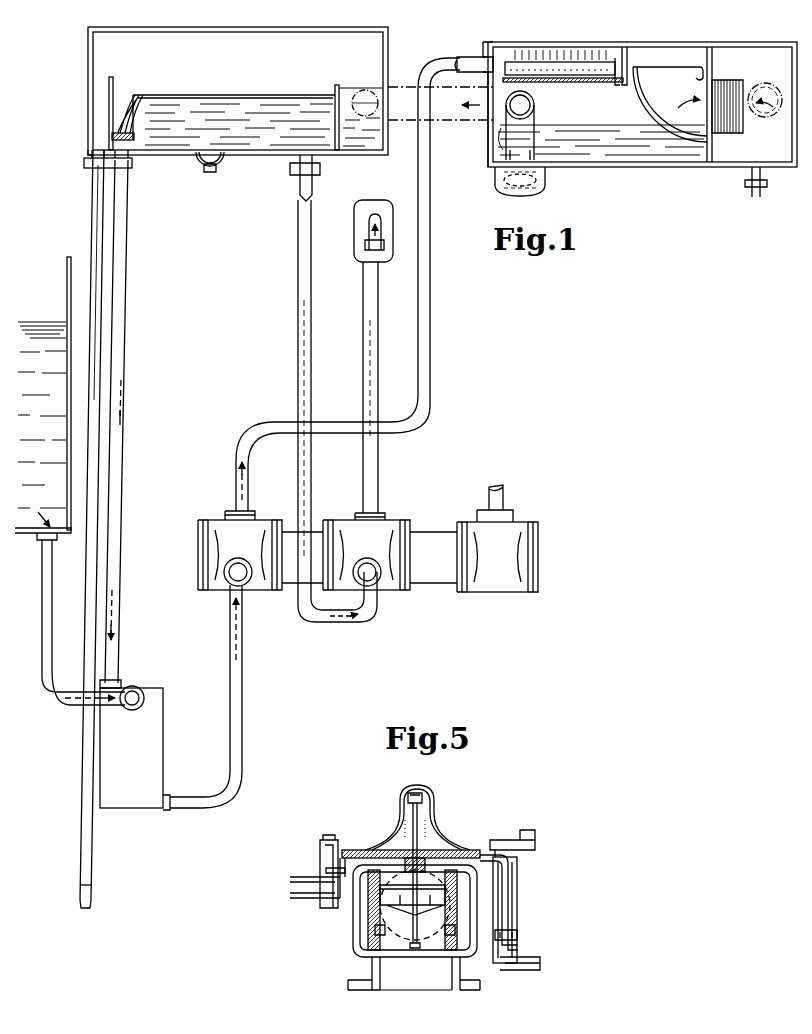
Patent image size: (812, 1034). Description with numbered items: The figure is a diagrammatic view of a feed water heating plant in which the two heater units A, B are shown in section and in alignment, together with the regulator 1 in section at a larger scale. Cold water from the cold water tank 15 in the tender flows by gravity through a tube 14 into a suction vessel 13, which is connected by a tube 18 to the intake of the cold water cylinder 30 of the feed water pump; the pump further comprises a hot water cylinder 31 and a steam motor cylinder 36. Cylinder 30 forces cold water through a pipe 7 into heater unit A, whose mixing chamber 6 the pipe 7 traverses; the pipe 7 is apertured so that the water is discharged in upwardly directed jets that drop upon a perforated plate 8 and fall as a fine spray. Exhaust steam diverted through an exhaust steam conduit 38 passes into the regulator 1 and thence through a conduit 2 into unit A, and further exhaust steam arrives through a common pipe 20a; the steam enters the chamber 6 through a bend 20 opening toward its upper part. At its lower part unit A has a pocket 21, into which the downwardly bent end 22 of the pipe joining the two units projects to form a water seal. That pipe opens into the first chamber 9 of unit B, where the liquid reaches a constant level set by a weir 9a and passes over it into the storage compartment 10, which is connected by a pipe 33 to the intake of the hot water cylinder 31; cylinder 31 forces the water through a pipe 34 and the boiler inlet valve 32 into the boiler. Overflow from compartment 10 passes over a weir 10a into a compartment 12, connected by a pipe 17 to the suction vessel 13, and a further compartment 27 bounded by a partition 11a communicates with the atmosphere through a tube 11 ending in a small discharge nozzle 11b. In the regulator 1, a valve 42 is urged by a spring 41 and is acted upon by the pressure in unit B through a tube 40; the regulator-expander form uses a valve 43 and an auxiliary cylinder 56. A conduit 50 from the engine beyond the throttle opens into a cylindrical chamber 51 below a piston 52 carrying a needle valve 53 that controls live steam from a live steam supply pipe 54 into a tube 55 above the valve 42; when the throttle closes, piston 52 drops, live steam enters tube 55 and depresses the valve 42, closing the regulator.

In FIG. 1, the heater unit A is at (640, 91).
In FIG. 1, the heater unit B is at (238, 81).
In FIG. 5, the regulator 1 is at (362, 930).
In FIG. 5, the conduit 2 is at (422, 955).
In FIG. 1, the mixing chamber 6 is at (655, 58).
In FIG. 1, the pipe 7 is at (508, 67).
In FIG. 1, the perforated plate 8 is at (545, 78).
In FIG. 1, the first chamber 9 is at (364, 136).
In FIG. 1, the partition or weir 9a is at (331, 96).
In FIG. 1, the compartment 10 is at (271, 124).
In FIG. 1, the partition or weir 10a is at (137, 122).
In FIG. 1, the tube 11 is at (98, 240).
In FIG. 1, the partition 11a is at (92, 78).
In FIG. 1, the discharge nozzle 11b is at (85, 895).
In FIG. 1, the compartment 12 is at (122, 92).
In FIG. 1, the suction vessel 13 is at (146, 752).
In FIG. 1, the tube 14 is at (63, 706).
In FIG. 1, the cold water tank 15 is at (43, 398).
In FIG. 1, the pipe 17 is at (115, 448).
In FIG. 1, the tube 18 is at (237, 768).
In FIG. 1, the bend 20 is at (650, 86).
In FIG. 1, the common pipe 20a is at (752, 191).
In FIG. 1, the pocket 21 is at (548, 177).
In FIG. 1, the downwardly bent end 22 is at (500, 167).
In FIG. 1, the compartment 27 is at (97, 84).
In FIG. 1, the cold water cylinder 30 is at (220, 584).
In FIG. 1, the hot water cylinder 31 is at (400, 591).
In FIG. 1, the boiler inlet valve 32 is at (362, 229).
In FIG. 1, the pipe 33 is at (305, 309).
In FIG. 1, the pipe 34 is at (370, 400).
In FIG. 1, the steam motor cylinder 36 is at (492, 598).
In FIG. 5, the exhaust steam conduit 38 is at (415, 999).
In FIG. 5, the tube 40 is at (305, 893).
In FIG. 5, the spring 41 is at (399, 845).
In FIG. 5, the valve 42 is at (437, 868).
In FIG. 5, the valve 43 is at (380, 935).
In FIG. 5, the conduit 50 is at (520, 968).
In FIG. 5, the cylindrical chamber 51 is at (512, 905).
In FIG. 5, the piston 52 is at (514, 935).
In FIG. 5, the valve or needle 53 is at (514, 859).
In FIG. 5, the live steam supply pipe 54 is at (516, 845).
In FIG. 5, the tube 55 is at (480, 862).
In FIG. 5, the auxiliary cylinder 56 is at (339, 897).